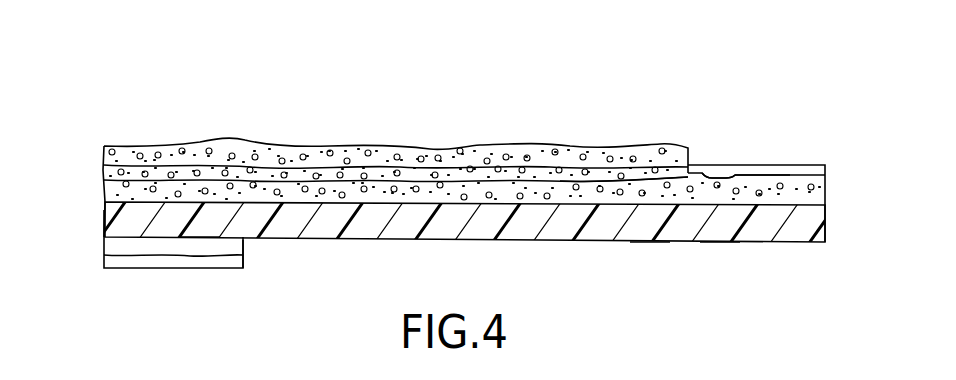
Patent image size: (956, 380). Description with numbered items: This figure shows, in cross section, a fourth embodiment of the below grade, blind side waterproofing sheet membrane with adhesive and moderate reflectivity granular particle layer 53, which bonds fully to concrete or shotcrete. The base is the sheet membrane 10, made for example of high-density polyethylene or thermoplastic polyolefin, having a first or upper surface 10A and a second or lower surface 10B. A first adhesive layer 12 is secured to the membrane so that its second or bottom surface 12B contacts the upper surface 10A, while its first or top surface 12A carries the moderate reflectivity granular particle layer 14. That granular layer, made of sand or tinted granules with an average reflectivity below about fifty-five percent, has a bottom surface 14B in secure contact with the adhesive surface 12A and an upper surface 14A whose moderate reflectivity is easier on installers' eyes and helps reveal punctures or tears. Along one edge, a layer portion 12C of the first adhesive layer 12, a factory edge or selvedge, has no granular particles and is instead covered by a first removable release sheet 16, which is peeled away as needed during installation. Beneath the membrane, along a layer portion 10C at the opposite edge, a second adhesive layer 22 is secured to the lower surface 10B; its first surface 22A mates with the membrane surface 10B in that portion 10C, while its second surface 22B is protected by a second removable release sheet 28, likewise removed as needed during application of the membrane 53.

The sheet membrane 10 is at (792, 230).
The first surface of sheet membrane 10A is at (718, 207).
The second surface of sheet membrane 10B is at (650, 243).
The layer portion of membrane 10C is at (200, 237).
The first adhesive layer 12 is at (773, 190).
The first surface of first adhesive layer 12A is at (698, 173).
The second surface of first adhesive layer 12B is at (612, 180).
The layer portion of first adhesive layer 12C is at (730, 175).
The moderate reflectivity granular particle layer 14 is at (548, 157).
The first surface of granular particle layer 14A is at (473, 148).
The second surface of granular particle layer 14B is at (400, 180).
The first removable release sheet 16 is at (755, 163).
The second adhesive layer 22 is at (233, 248).
The first surface of second adhesive layer 22A is at (108, 222).
The second surface of second adhesive layer 22B is at (127, 255).
The second removable release sheet 28 is at (243, 270).
The waterproofing sheet membrane with adhesive and moderate reflectivity granular pa 53 is at (611, 64).